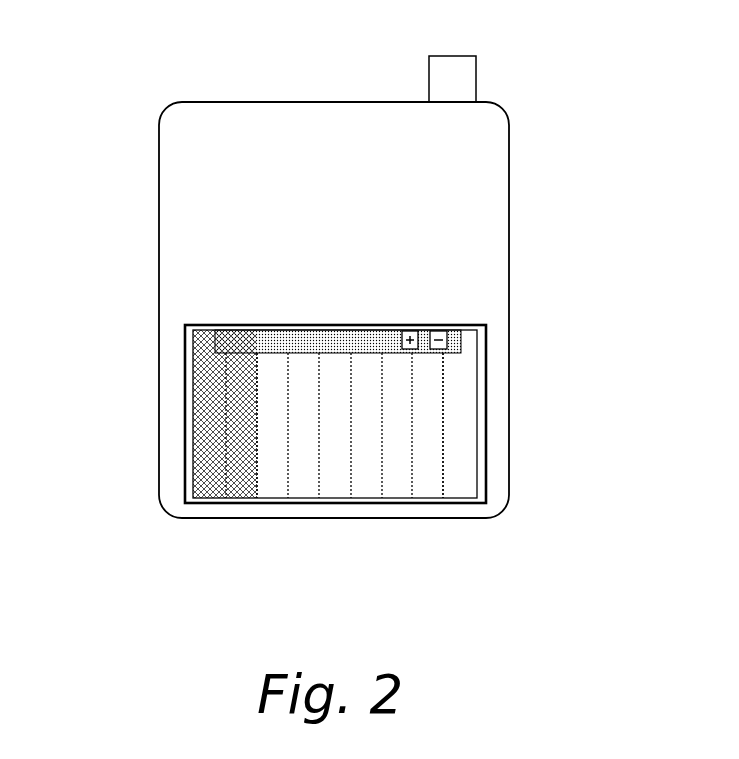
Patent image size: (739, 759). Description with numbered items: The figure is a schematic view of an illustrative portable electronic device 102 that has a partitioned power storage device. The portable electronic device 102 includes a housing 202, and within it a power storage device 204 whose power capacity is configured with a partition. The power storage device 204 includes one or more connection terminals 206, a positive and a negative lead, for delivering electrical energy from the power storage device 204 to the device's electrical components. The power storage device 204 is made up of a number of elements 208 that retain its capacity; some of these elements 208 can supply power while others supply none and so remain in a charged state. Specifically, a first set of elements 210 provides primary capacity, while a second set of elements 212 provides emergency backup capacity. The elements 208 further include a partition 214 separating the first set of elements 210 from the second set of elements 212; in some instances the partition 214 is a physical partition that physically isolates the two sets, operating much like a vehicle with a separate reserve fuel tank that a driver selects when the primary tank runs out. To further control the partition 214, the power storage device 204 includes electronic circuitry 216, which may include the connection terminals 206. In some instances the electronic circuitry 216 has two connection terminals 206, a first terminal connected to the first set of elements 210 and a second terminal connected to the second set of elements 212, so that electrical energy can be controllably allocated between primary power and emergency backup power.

The portable electronic device 102 is at (156, 70).
The housing 202 is at (510, 153).
The power storage device 204 is at (187, 323).
The connection terminals 206 is at (433, 318).
The elements 208 is at (433, 401).
The first set of elements 210 is at (463, 447).
The second set of elements 212 is at (213, 432).
The partition 214 is at (257, 499).
The electronic circuitry 216 is at (220, 350).